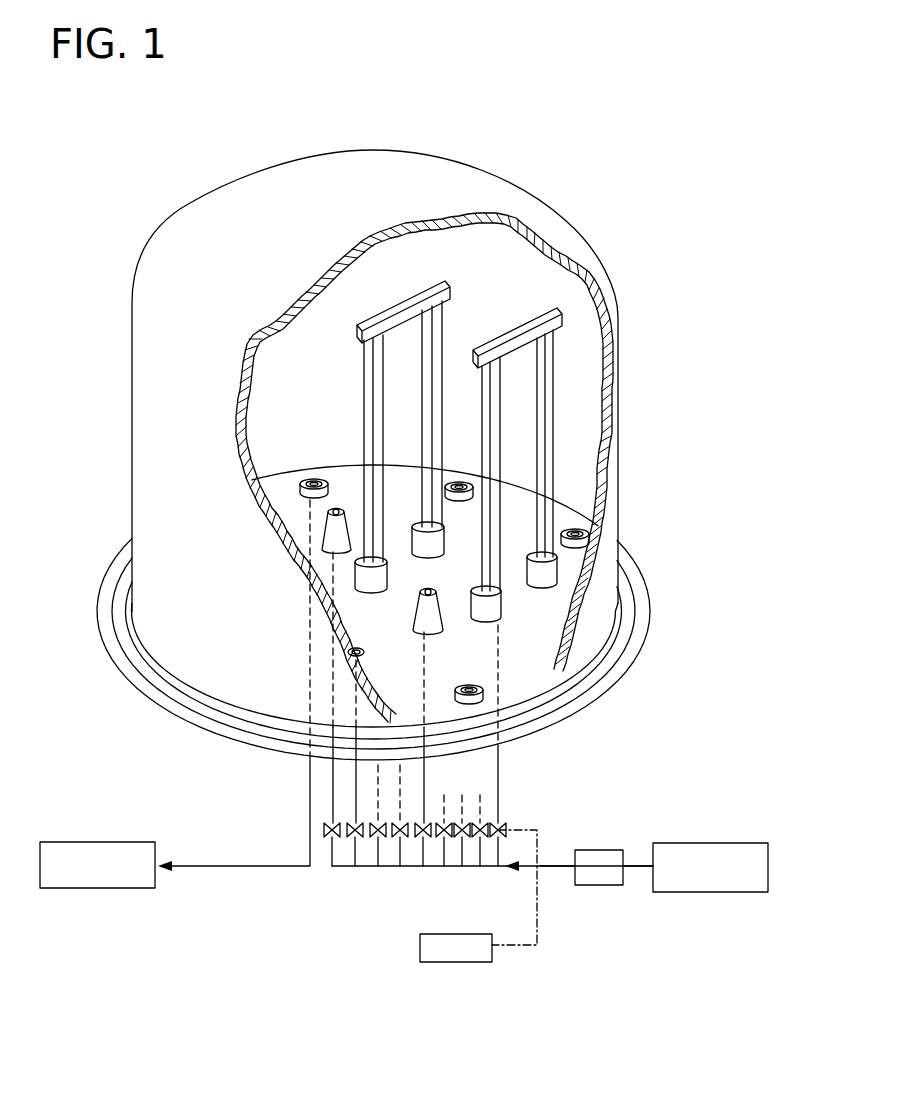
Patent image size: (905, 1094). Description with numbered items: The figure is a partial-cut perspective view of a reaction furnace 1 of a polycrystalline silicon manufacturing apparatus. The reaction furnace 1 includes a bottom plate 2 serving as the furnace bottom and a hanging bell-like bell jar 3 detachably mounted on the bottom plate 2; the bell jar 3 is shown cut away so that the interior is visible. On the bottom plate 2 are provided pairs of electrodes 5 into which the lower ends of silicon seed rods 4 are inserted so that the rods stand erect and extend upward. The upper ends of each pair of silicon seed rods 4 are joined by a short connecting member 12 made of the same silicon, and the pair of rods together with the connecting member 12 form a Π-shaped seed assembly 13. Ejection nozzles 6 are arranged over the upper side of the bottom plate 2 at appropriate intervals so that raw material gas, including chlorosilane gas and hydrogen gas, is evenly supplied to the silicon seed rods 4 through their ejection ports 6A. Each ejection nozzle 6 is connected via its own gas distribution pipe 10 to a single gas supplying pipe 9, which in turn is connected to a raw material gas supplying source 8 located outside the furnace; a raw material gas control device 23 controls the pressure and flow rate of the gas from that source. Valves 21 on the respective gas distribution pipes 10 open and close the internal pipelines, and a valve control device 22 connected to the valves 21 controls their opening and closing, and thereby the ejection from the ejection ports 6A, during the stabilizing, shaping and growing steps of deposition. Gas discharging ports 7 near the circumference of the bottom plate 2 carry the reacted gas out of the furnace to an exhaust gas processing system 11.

The reaction furnace 1 is at (680, 158).
The bottom plate 2 is at (234, 734).
The bell jar 3 is at (150, 375).
The silicon seed rods 4 is at (364, 401).
The electrodes 5 is at (423, 557).
The ejection nozzles 6 is at (330, 540).
The ejection ports 6A is at (330, 508).
The gas discharging ports 7 is at (302, 483).
The raw material gas supplying source 8 is at (707, 895).
The gas supplying pipe 9 is at (550, 868).
The gas distribution pipes 10 is at (340, 654).
The exhaust gas processing system 11 is at (96, 889).
The connecting member 12 is at (404, 305).
The seed assembly 13 is at (455, 278).
The valves 21 is at (330, 840).
The valve control device 22 is at (470, 964).
The raw material gas control device 23 is at (600, 886).